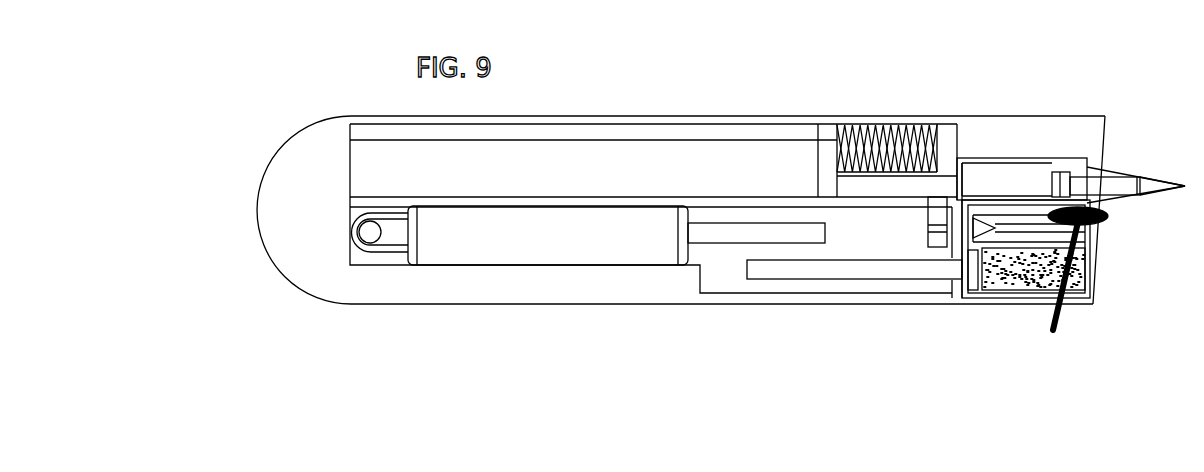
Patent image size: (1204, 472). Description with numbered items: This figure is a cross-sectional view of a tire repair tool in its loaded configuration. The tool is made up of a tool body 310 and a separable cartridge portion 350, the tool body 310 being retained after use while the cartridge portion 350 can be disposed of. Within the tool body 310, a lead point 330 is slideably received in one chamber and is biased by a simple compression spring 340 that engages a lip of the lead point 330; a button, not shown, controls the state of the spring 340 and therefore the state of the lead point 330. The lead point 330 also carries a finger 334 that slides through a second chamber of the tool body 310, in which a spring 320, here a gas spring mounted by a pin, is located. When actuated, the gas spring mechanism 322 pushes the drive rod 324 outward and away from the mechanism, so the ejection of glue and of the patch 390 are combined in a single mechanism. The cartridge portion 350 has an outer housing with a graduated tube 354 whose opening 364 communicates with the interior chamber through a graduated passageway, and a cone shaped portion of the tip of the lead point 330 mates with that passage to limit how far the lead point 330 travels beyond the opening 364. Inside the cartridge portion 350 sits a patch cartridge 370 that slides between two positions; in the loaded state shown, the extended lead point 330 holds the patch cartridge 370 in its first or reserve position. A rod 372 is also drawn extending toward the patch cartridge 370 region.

The tool body 310 is at (285, 266).
The spring 320 is at (433, 252).
The gas spring mechanism 322 is at (529, 246).
The drive rod 324 is at (720, 233).
The lead point 330 is at (998, 182).
The finger 334 is at (928, 220).
The compression spring 340 is at (892, 124).
The cartridge portion 350 is at (1058, 144).
The graduated tube 354 is at (1130, 178).
The opening 364 is at (1135, 182).
The patch cartridge 370 is at (1005, 292).
The actuating rod 372 is at (857, 273).
The patch 390 is at (1095, 222).